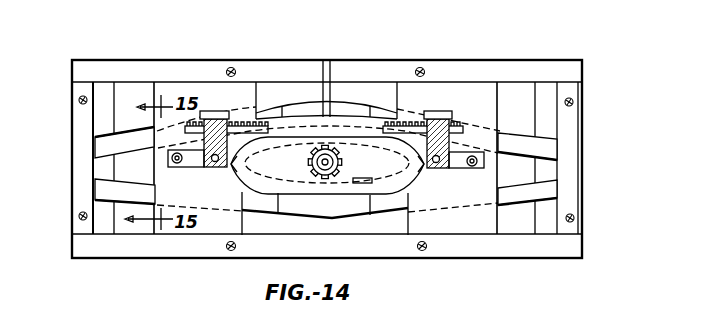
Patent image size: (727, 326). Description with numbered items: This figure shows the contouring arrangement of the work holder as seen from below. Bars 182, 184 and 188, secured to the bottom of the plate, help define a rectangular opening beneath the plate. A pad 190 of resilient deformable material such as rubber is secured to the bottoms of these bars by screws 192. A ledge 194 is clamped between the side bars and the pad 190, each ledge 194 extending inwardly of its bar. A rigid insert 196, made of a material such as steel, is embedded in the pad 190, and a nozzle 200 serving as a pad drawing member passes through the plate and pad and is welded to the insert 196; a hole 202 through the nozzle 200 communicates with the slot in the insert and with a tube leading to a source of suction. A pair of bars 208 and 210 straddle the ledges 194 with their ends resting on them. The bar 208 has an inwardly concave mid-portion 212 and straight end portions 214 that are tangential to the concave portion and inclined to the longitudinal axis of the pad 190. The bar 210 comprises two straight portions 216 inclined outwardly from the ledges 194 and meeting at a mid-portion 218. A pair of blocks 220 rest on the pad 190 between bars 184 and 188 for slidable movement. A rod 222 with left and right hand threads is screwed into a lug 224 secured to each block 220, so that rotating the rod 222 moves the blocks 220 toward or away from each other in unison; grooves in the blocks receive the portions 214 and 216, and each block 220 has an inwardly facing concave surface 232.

The bar 182 is at (80, 158).
The bar 184 is at (371, 78).
The bar 188 is at (445, 249).
The pad 190 is at (135, 173).
The screws 192 is at (573, 102).
The ledge 194 is at (110, 117).
The insert 196 is at (257, 178).
The nozzle 200 is at (310, 158).
The hole 202 is at (316, 168).
The bar 208 is at (131, 140).
The bar 210 is at (140, 203).
The mid-portion 212 is at (302, 108).
The end portions 214 is at (210, 119).
The straight portions 216 is at (225, 209).
The mid-portion 218 is at (348, 207).
The blocks 220 is at (168, 90).
The rod 222 is at (340, 123).
The lug 224 is at (218, 112).
The concave surface 232 is at (203, 165).